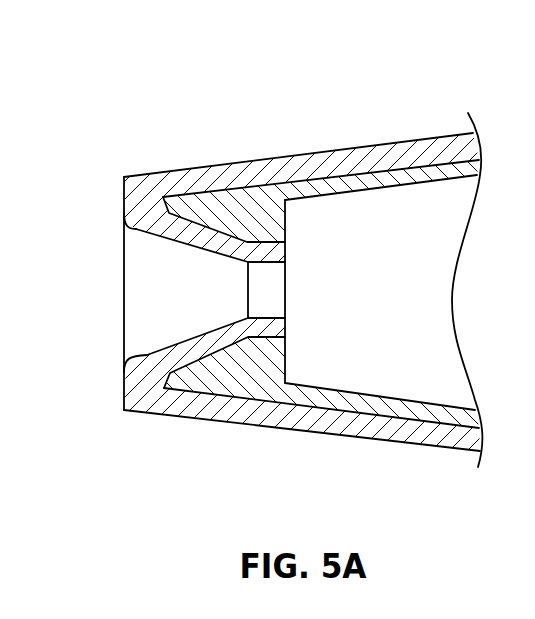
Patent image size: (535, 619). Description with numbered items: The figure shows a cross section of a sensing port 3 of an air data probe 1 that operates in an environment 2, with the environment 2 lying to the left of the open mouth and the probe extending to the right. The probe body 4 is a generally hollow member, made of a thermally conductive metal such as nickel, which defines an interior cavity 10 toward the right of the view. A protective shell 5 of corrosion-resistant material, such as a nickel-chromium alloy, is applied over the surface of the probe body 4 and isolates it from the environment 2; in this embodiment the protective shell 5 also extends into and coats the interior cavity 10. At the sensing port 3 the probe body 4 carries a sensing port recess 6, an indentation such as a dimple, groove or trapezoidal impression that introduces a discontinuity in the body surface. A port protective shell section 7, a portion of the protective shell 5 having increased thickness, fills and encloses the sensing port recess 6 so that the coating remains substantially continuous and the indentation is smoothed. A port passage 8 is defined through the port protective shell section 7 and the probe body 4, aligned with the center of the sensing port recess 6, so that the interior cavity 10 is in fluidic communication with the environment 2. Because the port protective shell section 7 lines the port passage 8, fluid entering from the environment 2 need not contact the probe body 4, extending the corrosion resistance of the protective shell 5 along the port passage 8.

The air data probe 1 is at (113, 73).
The environment 2 is at (70, 135).
The sensing port 3 is at (188, 311).
The probe body 4 is at (339, 400).
The protective shell 5 is at (223, 411).
The sensing port recess 6 is at (243, 201).
The port protective shell section 7 is at (122, 226).
The port passage 8 is at (142, 267).
The interior cavity 10 is at (347, 322).